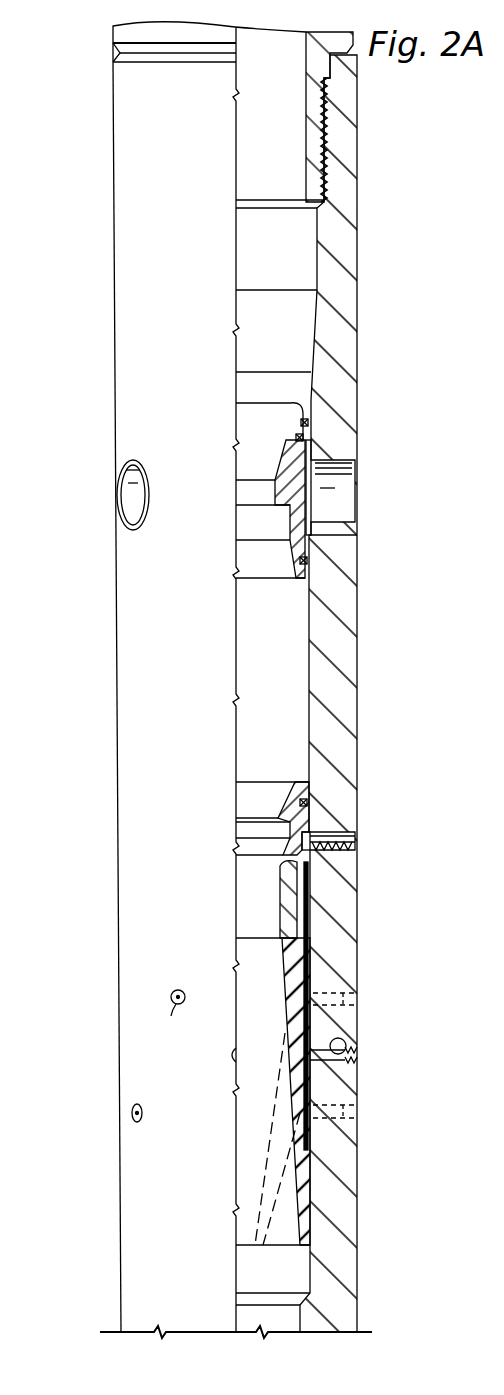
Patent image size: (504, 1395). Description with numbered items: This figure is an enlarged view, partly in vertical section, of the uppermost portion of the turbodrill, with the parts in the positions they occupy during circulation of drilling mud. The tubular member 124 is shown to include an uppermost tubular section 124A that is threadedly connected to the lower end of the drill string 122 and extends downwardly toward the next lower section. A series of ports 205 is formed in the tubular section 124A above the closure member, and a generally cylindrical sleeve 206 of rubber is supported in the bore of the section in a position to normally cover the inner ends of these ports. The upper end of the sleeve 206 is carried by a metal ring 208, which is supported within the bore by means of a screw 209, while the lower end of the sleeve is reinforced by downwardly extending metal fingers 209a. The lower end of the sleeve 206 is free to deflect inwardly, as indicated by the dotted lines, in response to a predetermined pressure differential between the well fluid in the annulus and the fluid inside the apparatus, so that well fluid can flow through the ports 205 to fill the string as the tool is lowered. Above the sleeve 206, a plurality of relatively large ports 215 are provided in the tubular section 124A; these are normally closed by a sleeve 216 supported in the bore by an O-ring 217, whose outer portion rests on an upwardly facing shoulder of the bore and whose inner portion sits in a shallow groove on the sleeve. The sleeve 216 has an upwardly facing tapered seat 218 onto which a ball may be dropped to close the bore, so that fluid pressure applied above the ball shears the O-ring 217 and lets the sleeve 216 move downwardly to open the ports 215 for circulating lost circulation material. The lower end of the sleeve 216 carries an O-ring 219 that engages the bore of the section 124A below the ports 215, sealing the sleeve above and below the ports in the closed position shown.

The drill string 122 is at (113, 33).
The tubular member 124 is at (358, 733).
The uppermost tubular section 124A is at (358, 630).
The ports 205 is at (382, 1040).
The sleeve 206 is at (282, 955).
The metal ring 208 is at (279, 862).
The screw 209 is at (356, 840).
The metal fingers 209a is at (308, 946).
The relatively large ports 215 is at (335, 528).
The sleeve 216 is at (283, 443).
The O-ring 217 is at (310, 424).
The tapered seat 218 is at (280, 462).
The O-ring 219 is at (308, 561).